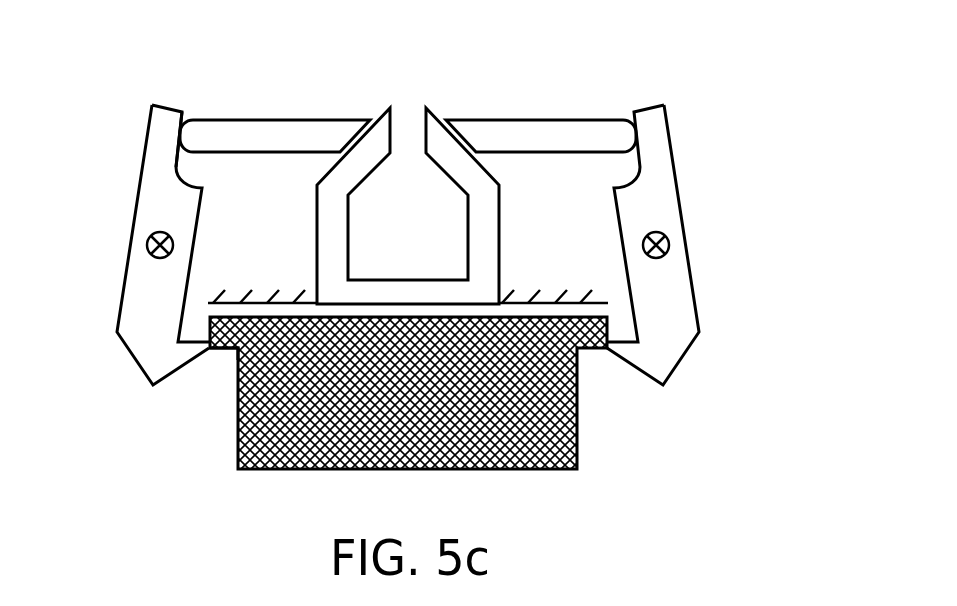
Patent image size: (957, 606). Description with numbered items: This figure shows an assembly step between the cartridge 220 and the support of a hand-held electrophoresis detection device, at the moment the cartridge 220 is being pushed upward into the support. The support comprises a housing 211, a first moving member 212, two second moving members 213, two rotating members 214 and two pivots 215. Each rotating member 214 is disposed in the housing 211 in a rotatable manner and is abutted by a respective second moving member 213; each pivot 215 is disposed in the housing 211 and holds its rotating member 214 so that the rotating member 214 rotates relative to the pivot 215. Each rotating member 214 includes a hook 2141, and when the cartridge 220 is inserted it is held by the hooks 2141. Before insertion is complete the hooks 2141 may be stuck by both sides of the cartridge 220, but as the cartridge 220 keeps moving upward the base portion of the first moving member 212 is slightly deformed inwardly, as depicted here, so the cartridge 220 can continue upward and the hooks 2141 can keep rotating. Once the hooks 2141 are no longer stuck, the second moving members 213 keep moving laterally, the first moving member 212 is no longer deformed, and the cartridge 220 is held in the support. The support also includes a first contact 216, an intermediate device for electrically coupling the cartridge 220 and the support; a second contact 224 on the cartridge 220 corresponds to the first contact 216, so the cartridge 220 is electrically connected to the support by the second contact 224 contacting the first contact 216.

The housing 211 is at (243, 197).
The first moving member 212 is at (487, 235).
The second moving member 213 is at (258, 132).
The rotating member 214 is at (148, 300).
The hook 2141 is at (633, 338).
The pivot 215 is at (147, 246).
The first contact 216 is at (252, 312).
The cartridge 220 is at (577, 430).
The second contact 224 is at (222, 348).